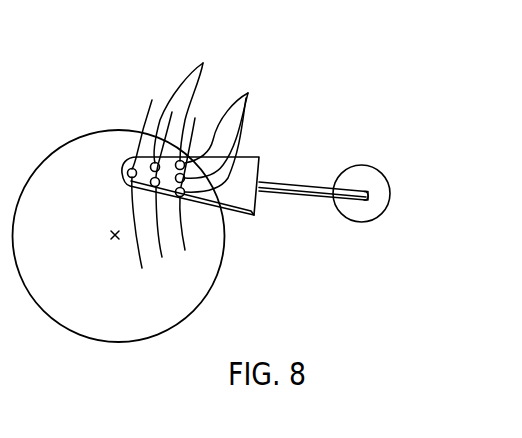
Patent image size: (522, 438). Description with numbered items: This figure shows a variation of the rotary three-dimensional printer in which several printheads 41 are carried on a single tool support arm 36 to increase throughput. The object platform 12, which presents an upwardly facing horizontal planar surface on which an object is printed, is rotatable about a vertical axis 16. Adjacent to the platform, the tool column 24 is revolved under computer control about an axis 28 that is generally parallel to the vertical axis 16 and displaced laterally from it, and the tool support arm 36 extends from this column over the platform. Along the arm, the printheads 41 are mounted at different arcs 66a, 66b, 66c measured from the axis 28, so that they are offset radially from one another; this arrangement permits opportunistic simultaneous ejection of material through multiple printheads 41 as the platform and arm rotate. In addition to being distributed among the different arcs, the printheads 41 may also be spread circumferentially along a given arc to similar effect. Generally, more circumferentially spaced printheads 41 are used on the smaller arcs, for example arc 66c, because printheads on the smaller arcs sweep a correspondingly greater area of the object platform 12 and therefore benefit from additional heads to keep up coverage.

The object platform 12 is at (212, 260).
The vertical axis 16 is at (115, 235).
The tool column 24 is at (353, 167).
The axis 28 is at (367, 199).
The tool support arm 36 is at (298, 183).
The printheads 41 is at (202, 118).
The arc 66a is at (130, 207).
The arc 66b is at (156, 242).
The arc 66c is at (182, 233).